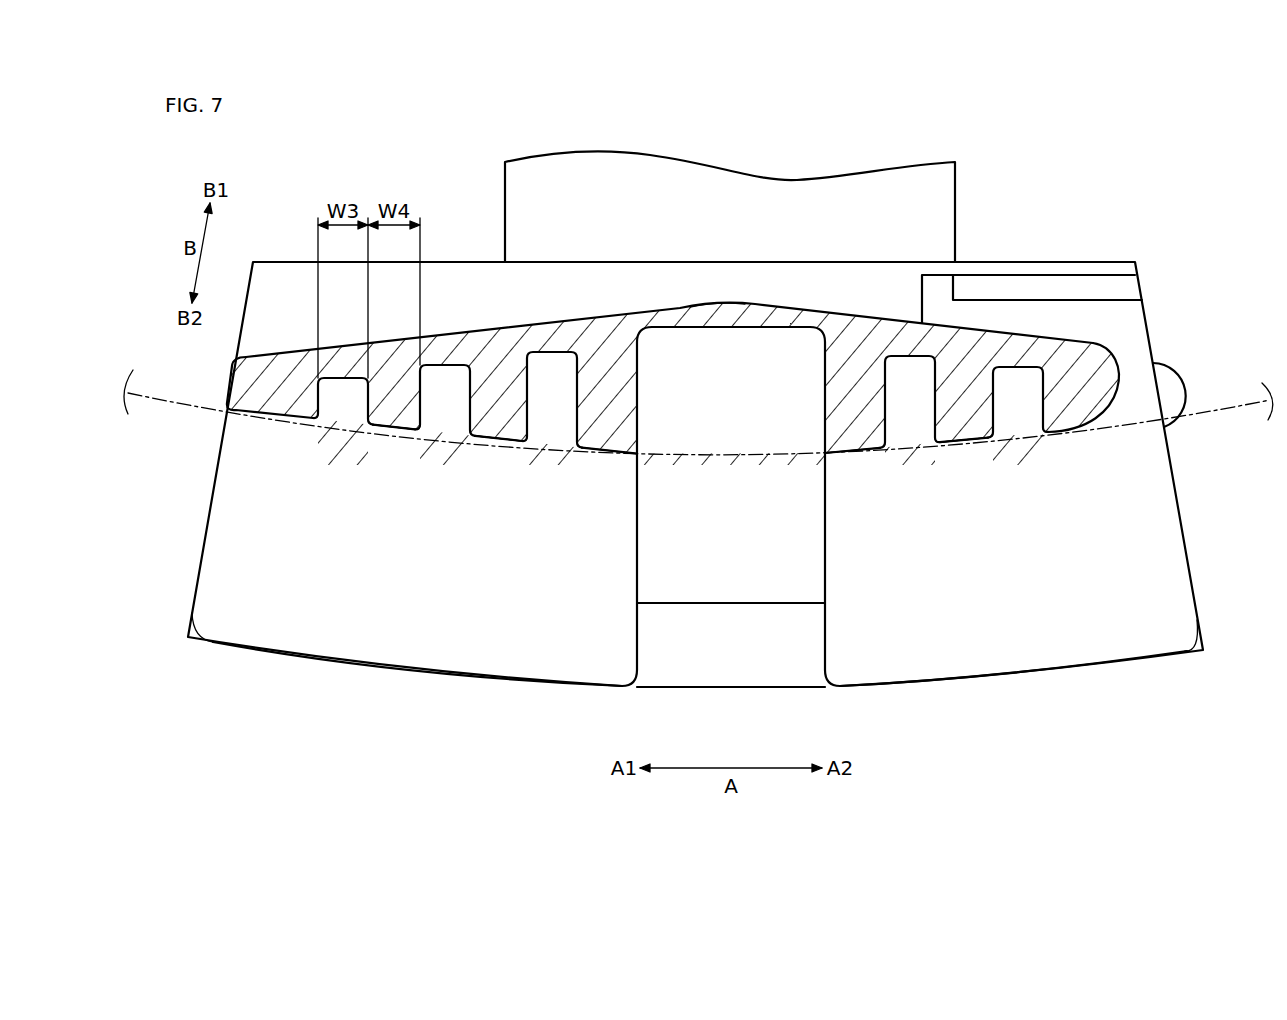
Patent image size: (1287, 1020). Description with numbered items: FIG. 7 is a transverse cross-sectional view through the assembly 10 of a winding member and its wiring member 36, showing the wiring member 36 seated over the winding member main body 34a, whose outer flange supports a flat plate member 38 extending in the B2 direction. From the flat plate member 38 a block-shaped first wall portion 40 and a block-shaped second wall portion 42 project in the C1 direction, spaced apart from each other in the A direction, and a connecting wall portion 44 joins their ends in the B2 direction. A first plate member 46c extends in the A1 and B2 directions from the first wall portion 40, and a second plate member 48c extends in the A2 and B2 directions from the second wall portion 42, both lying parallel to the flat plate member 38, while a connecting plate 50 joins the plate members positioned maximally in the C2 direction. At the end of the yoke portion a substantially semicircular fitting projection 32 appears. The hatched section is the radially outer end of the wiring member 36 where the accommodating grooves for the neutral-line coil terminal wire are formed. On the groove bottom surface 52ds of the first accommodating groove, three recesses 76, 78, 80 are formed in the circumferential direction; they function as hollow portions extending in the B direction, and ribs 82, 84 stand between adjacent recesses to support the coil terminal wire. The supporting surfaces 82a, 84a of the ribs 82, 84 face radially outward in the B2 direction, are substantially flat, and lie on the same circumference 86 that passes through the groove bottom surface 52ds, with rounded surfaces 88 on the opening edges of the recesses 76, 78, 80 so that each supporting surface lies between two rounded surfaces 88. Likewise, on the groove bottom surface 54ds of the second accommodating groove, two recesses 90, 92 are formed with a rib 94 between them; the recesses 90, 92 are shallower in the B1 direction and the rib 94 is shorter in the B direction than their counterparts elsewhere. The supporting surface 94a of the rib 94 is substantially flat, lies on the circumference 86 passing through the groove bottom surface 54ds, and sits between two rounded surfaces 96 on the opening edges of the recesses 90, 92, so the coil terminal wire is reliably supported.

The bicycle component 10 is at (369, 148).
The fitting projection 32 is at (1180, 390).
The winding member main body 34a is at (656, 175).
The wiring member 36 is at (1153, 300).
The flat plate member 38 is at (197, 637).
The first wall portion 40 is at (248, 385).
The second wall portion 42 is at (1097, 363).
The connecting wall portion 44 is at (735, 317).
The first plate member 46c is at (376, 647).
The second plate member 48c is at (1050, 655).
The connecting plate 50 is at (752, 677).
The groove bottom surface 52ds is at (605, 452).
The groove bottom surface 54ds is at (853, 455).
The recess 76 is at (342, 392).
The recess 78 is at (447, 385).
The recess 80 is at (556, 377).
The rib 82 is at (402, 432).
The supporting surface 82a is at (383, 432).
The rib 84 is at (512, 443).
The supporting surface 84a is at (507, 427).
The circumference 86 is at (1226, 414).
The rounded surface 88 is at (325, 419).
The recess 90 is at (906, 367).
The recess 92 is at (1021, 380).
The rib 94 is at (973, 422).
The supporting surface 94a is at (952, 447).
The rounded surface 96 is at (892, 446).